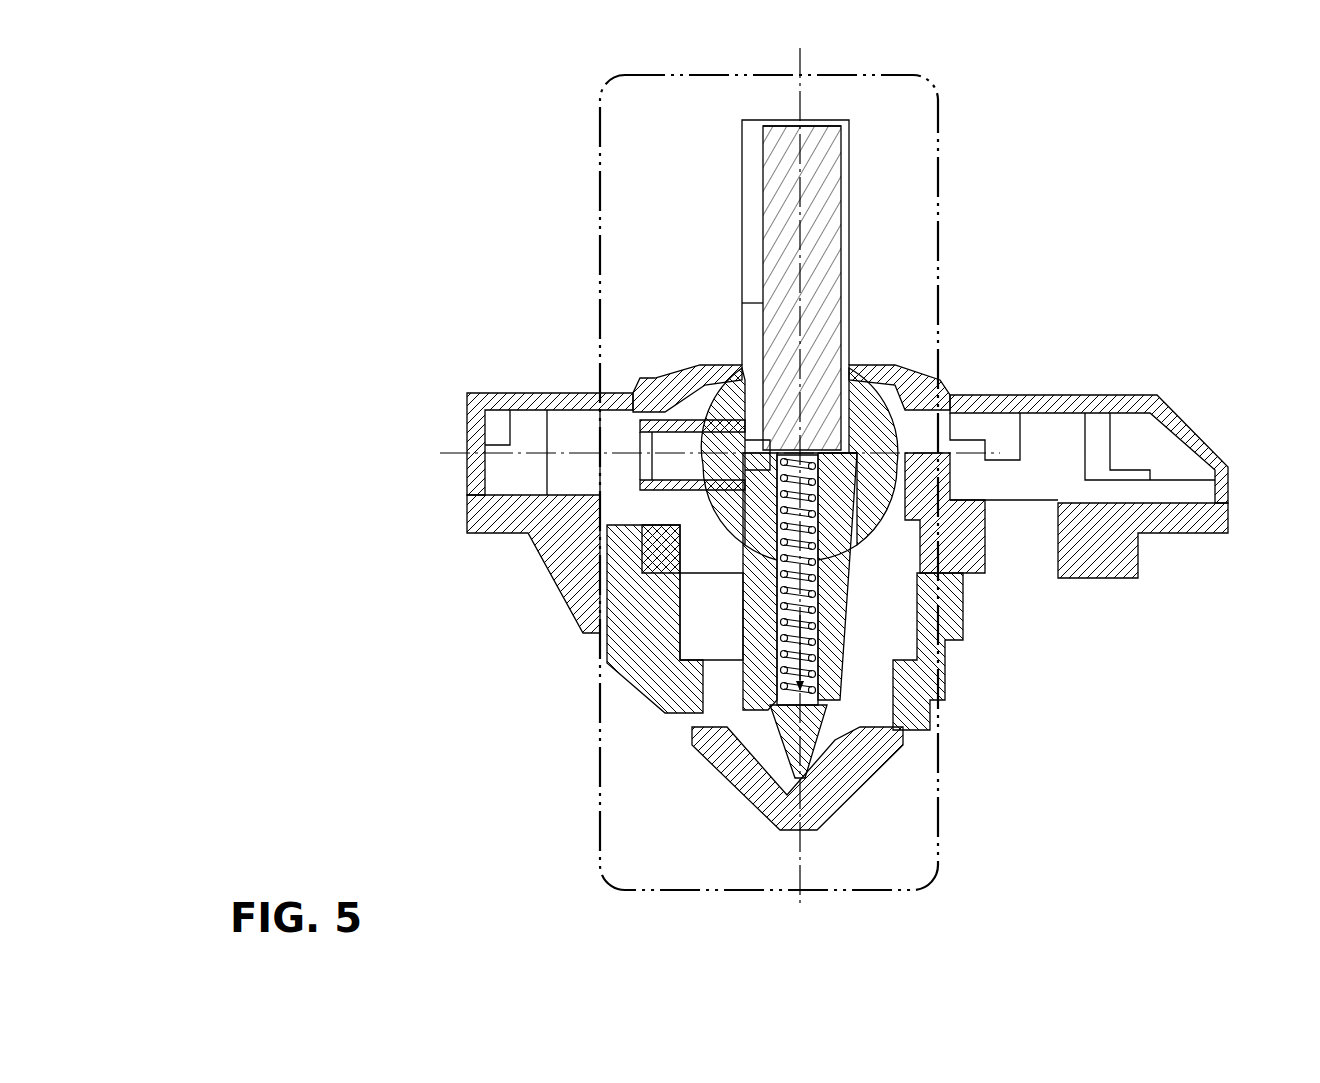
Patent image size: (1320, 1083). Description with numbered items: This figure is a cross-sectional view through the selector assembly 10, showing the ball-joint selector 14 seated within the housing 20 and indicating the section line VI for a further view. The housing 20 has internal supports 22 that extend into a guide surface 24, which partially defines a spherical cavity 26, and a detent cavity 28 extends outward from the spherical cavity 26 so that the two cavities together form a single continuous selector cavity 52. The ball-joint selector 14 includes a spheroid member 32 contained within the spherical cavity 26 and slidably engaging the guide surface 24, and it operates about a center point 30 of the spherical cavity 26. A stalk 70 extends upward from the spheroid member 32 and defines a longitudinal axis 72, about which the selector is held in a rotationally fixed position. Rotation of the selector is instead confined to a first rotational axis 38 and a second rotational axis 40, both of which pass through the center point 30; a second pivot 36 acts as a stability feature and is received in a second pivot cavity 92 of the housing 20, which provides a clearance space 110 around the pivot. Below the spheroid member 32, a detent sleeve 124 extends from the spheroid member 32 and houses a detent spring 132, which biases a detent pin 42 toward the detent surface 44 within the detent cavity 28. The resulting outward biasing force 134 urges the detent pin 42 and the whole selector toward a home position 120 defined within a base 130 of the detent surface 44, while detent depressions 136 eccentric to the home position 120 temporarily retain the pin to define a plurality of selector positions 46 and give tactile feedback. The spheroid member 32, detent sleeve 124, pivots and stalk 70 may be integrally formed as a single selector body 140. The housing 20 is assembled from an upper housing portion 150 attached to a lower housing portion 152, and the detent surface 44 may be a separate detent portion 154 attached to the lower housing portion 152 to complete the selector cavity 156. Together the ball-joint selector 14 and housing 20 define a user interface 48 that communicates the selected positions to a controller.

The selector assembly 10 is at (535, 192).
The ball-joint selector 14 is at (746, 170).
The housing 20 is at (1078, 388).
The internal supports 22 is at (905, 540).
The guide surface 24 is at (1000, 455).
The spherical cavity 26 is at (878, 415).
The detent cavity 28 is at (752, 718).
The center point 30 is at (615, 447).
The spheroid member 32 is at (843, 415).
The second pivot 36 is at (645, 512).
The first rotational axis 38 is at (798, 440).
The second rotational axis 40 is at (940, 405).
The detent pin 42 is at (870, 795).
The detent surface 44 is at (815, 665).
The selector positions 46 is at (862, 281).
The user interface 48 is at (885, 213).
The selector cavity 52 is at (730, 545).
The stalk 70 is at (830, 160).
The longitudinal axis 72 is at (800, 66).
The second pivot cavity 92 is at (605, 420).
The clearance space 110 is at (680, 400).
The home position 120 is at (800, 815).
The detent sleeve 124 is at (768, 637).
The base 130 is at (725, 797).
The detent spring 132 is at (840, 690).
The outward biasing force 134 is at (832, 640).
The detent depressions 136 is at (862, 760).
The selector body 140 is at (940, 610).
The upper housing portion 150 is at (1150, 410).
The lower housing portion 152 is at (1130, 533).
The detent portion 154 is at (832, 820).
The selector cavity 156 is at (737, 348).
The section view indicator VI is at (935, 85).